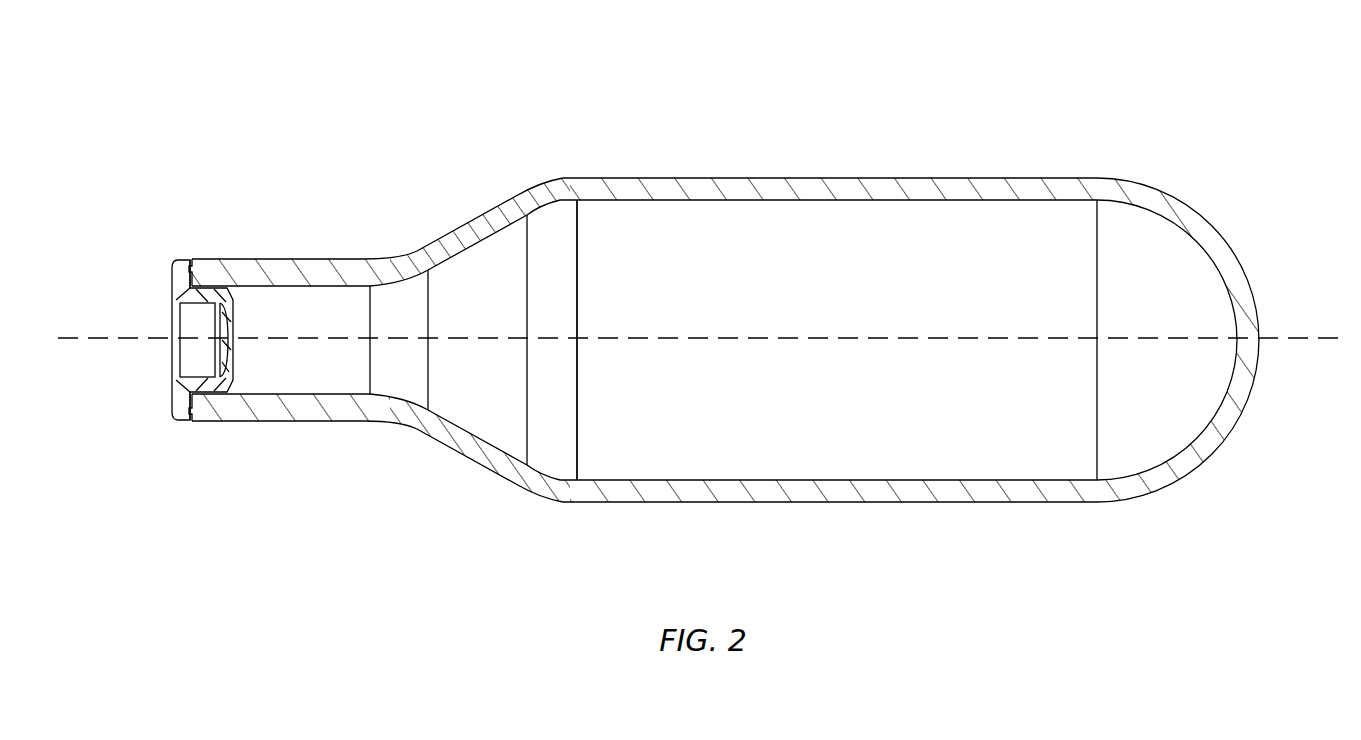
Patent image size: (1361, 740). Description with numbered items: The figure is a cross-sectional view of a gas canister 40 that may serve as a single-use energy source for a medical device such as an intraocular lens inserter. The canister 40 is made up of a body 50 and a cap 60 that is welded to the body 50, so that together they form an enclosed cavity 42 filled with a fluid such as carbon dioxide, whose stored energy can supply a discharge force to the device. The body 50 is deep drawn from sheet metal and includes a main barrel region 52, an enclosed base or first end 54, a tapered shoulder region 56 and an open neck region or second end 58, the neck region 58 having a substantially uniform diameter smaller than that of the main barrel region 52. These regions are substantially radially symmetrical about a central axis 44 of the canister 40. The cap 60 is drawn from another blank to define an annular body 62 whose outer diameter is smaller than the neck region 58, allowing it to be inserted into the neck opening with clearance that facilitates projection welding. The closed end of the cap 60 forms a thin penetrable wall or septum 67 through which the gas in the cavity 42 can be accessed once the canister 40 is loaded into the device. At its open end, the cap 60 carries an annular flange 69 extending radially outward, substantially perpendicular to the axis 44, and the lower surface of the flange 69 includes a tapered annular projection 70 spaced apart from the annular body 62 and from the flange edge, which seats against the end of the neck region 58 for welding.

The canister 40 is at (890, 125).
The enclosed cavity 42 is at (823, 293).
The central axis 44 is at (1290, 330).
The body 50 is at (1013, 173).
The main barrel region 52 is at (773, 180).
The enclosed base or first end 54 is at (1205, 225).
The tapered shoulder region 56 is at (473, 215).
The neck region or second end 58 is at (306, 258).
The cap 60 is at (208, 329).
The annular body 62 is at (202, 305).
The penetrable wall or septum 67 is at (233, 327).
The annular flange 69 is at (178, 262).
The annular projection 70 is at (193, 402).